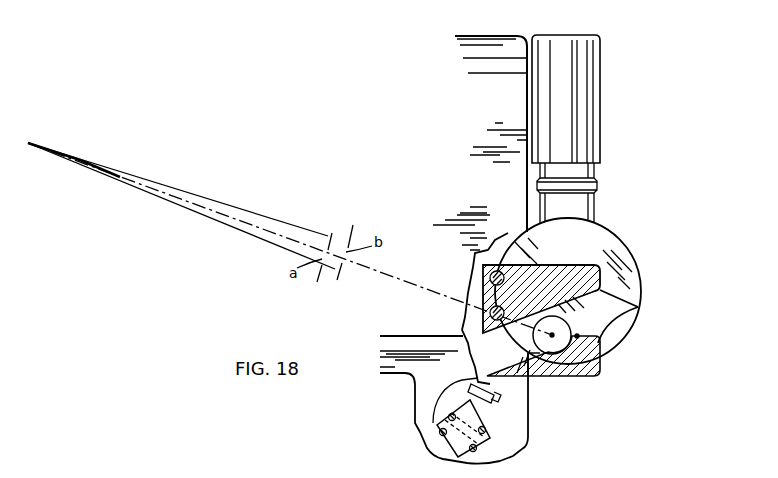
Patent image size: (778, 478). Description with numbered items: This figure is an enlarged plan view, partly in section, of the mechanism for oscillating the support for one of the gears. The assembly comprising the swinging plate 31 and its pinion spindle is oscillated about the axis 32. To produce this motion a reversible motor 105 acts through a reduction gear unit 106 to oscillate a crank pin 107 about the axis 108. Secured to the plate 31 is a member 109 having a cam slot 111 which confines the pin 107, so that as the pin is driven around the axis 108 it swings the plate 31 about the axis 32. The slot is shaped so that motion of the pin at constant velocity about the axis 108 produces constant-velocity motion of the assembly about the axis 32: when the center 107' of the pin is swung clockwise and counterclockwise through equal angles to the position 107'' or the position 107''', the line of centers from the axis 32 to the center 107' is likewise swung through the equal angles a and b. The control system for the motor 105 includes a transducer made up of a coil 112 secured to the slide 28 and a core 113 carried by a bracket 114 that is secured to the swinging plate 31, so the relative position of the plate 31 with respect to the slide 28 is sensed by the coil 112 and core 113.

The axis 32 is at (29, 142).
The plate 31 is at (491, 116).
The reversible motor 105 is at (583, 96).
The reduction gear unit 106 is at (615, 248).
The axis 108 is at (567, 288).
The position of pin center 107'' is at (481, 294).
The member 109 is at (636, 316).
The crank pin 107 is at (524, 339).
The center of the pin 107' is at (558, 369).
The position of pin center 107''' is at (547, 368).
The cam slot 111 is at (524, 366).
The bracket 114 is at (478, 380).
The coil 112 is at (485, 418).
The core 113 is at (440, 437).
The slide 28 is at (510, 442).